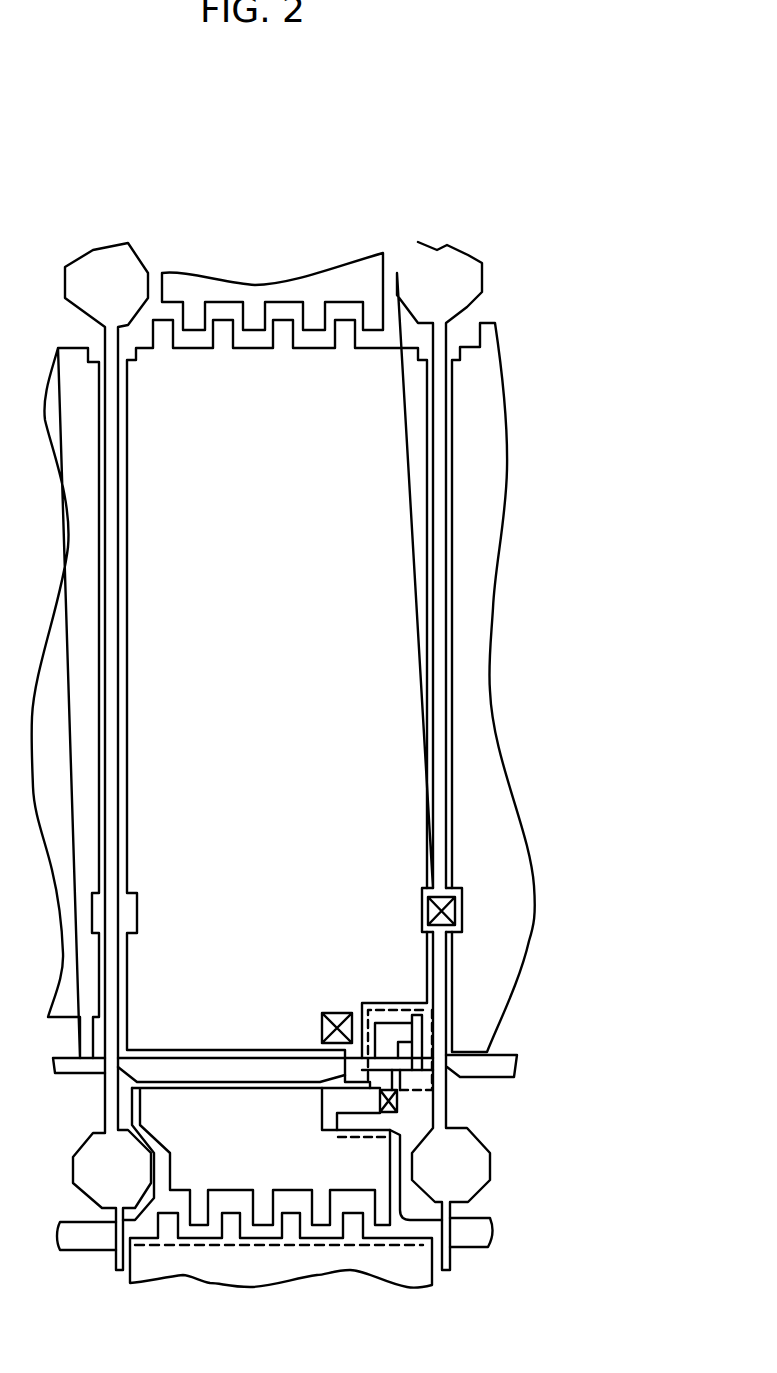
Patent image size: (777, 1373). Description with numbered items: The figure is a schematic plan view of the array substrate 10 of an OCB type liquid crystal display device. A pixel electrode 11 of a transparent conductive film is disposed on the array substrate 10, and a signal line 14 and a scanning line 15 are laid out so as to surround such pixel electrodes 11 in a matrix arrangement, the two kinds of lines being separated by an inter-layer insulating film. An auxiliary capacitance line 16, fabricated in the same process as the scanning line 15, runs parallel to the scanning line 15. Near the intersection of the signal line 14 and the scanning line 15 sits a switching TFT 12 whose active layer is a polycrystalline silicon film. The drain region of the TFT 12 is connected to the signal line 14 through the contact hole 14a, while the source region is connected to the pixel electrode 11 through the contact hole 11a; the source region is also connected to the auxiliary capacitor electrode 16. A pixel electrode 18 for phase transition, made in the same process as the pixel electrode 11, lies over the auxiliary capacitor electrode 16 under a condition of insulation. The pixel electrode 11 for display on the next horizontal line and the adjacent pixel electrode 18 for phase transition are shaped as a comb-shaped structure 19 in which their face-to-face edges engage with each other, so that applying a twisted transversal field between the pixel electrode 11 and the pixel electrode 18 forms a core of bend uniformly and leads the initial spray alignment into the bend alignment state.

The array substrate 10 is at (253, 210).
The pixel electrode 11 is at (492, 428).
The contact hole 11a is at (322, 1028).
The switching TFT 12 is at (443, 1100).
The signal line 14 is at (110, 258).
The contact hole 14a is at (462, 910).
The scanning line 15 is at (520, 1065).
The auxiliary capacitance line 16 is at (478, 1237).
The pixel electrode for phase transition 18 is at (343, 287).
The comb-shaped structure 19 is at (311, 1230).